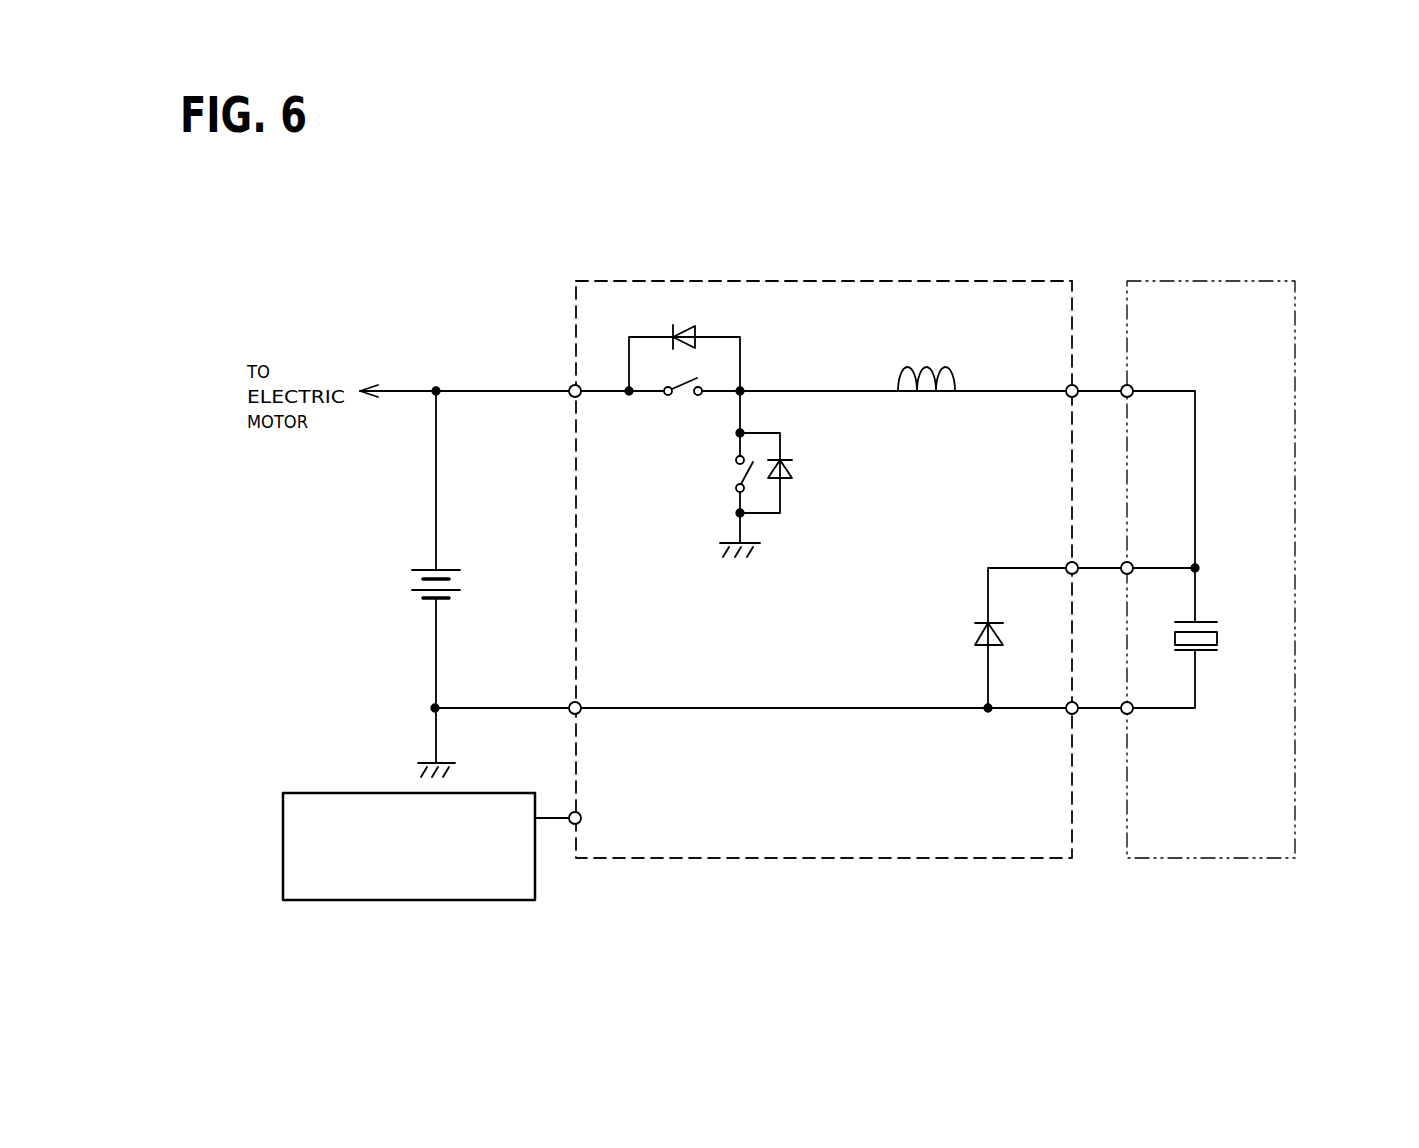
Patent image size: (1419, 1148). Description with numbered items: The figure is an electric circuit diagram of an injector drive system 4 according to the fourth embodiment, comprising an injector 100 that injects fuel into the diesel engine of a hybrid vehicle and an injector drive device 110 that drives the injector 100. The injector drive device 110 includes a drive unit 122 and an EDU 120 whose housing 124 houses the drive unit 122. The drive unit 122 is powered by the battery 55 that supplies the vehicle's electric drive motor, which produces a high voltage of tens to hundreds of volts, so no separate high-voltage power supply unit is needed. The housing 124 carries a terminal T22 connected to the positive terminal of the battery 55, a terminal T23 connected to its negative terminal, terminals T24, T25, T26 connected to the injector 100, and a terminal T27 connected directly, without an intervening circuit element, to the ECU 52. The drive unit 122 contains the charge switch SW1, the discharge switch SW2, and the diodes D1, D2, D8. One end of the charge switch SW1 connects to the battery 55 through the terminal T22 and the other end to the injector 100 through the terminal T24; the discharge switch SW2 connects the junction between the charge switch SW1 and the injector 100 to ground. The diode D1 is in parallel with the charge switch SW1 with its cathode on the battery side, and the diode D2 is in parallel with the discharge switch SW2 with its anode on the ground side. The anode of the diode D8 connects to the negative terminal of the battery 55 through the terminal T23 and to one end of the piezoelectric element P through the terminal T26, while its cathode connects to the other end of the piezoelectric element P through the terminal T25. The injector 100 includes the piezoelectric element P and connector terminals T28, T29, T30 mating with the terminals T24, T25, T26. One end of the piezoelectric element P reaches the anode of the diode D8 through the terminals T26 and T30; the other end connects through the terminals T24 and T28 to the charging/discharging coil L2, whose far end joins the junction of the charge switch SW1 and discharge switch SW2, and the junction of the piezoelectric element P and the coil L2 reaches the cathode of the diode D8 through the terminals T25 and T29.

The injector drive system 4 is at (1381, 177).
The injector drive device 110 is at (923, 203).
The EDU 120 is at (779, 246).
The housing 124 is at (998, 281).
The injector 100 is at (1205, 281).
The drive unit 122 is at (809, 341).
The diode D1 is at (696, 330).
The diode D2 is at (796, 472).
The diode D8 is at (974, 632).
The charge switch SW1 is at (694, 405).
The discharge switch SW2 is at (729, 467).
The charging/discharging coil L2 is at (929, 396).
The piezoelectric element P is at (1217, 638).
The battery 55 is at (425, 569).
The ECU 52 is at (283, 832).
The terminal T22 is at (571, 385).
The terminal T23 is at (571, 702).
The terminal T24 is at (1068, 384).
The terminal T25 is at (1068, 560).
The terminal T26 is at (1068, 702).
The terminal T27 is at (571, 811).
The connector terminal T28 is at (1123, 384).
The connector terminal T29 is at (1123, 560).
The connector terminal T30 is at (1123, 702).